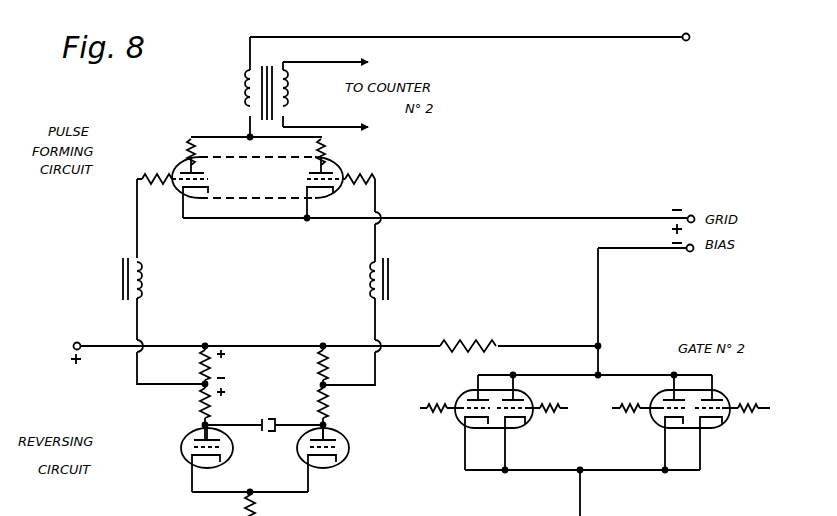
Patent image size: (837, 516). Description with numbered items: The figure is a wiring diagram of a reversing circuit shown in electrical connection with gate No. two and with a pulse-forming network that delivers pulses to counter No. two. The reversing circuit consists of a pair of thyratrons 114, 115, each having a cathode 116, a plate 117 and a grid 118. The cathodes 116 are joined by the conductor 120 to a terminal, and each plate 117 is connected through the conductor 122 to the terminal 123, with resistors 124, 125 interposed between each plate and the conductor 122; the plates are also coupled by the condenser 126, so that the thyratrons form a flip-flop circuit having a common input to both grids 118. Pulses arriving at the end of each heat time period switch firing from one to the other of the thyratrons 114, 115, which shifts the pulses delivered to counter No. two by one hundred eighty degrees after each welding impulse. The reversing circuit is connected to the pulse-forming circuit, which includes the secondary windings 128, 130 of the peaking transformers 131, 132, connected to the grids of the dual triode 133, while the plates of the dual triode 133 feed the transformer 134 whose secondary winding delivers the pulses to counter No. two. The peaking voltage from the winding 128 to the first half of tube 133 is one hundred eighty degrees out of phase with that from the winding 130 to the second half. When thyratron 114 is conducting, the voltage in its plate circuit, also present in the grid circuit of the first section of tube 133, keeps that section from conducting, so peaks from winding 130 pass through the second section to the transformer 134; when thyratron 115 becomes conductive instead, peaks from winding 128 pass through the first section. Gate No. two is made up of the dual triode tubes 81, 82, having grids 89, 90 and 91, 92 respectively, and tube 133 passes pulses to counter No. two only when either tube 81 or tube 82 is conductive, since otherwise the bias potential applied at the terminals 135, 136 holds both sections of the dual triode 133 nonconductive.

The transformer 134 is at (247, 93).
The dual triode 133 is at (350, 166).
The bias potential terminal 135 is at (695, 214).
The bias potential terminal 136 is at (694, 252).
The peaking transformer 131 is at (120, 278).
The secondary winding 128 is at (148, 272).
The secondary winding 130 is at (365, 276).
The peaking transformer 132 is at (398, 280).
The terminal 123 is at (78, 342).
The conductor 122 is at (178, 344).
The resistor 124 is at (215, 366).
The resistor 125 is at (200, 400).
The condenser 126 is at (266, 416).
The plate 117 is at (338, 440).
The grid 118 is at (345, 447).
The thyratron 114 is at (180, 457).
The thyratron 115 is at (338, 471).
The cathode 116 is at (325, 461).
The conductor 120 is at (227, 504).
The dual triode tube 81 is at (497, 431).
The grid 89 is at (449, 412).
The grid 90 is at (537, 412).
The dual triode tube 82 is at (690, 431).
The grid 91 is at (645, 412).
The grid 92 is at (735, 412).